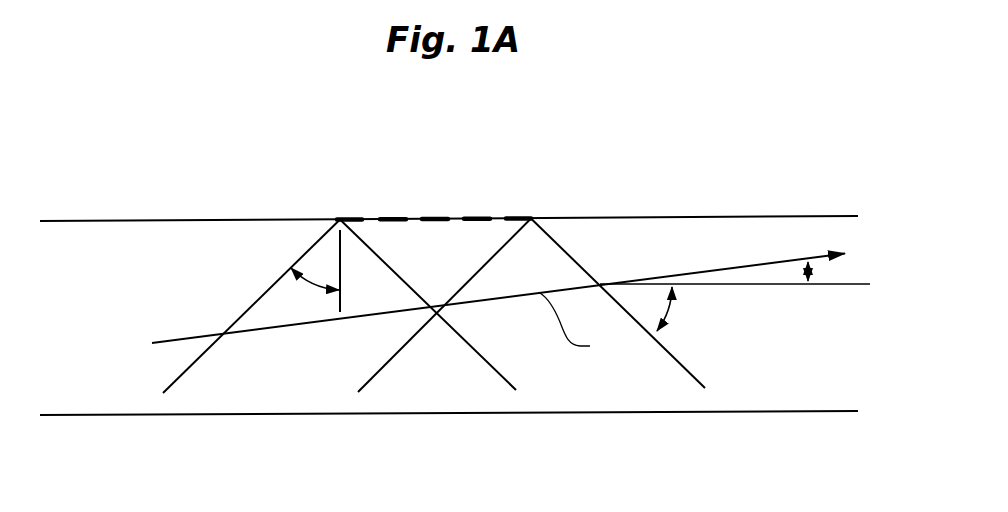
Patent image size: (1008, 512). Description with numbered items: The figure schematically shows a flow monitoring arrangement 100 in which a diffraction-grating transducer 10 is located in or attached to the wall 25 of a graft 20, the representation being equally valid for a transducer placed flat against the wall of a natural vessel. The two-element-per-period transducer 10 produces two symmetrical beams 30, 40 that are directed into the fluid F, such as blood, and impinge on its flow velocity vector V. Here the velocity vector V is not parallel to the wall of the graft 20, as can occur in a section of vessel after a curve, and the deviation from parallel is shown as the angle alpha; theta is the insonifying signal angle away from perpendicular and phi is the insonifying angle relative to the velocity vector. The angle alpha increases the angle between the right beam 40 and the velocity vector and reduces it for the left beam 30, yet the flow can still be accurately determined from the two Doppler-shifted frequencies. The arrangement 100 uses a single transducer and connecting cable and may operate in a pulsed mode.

The arrangement 100 is at (224, 155).
The transducer 10 is at (443, 219).
The graft 20 is at (808, 240).
The wall 25 is at (623, 219).
The beam 30 is at (320, 384).
The beam 40 is at (583, 394).